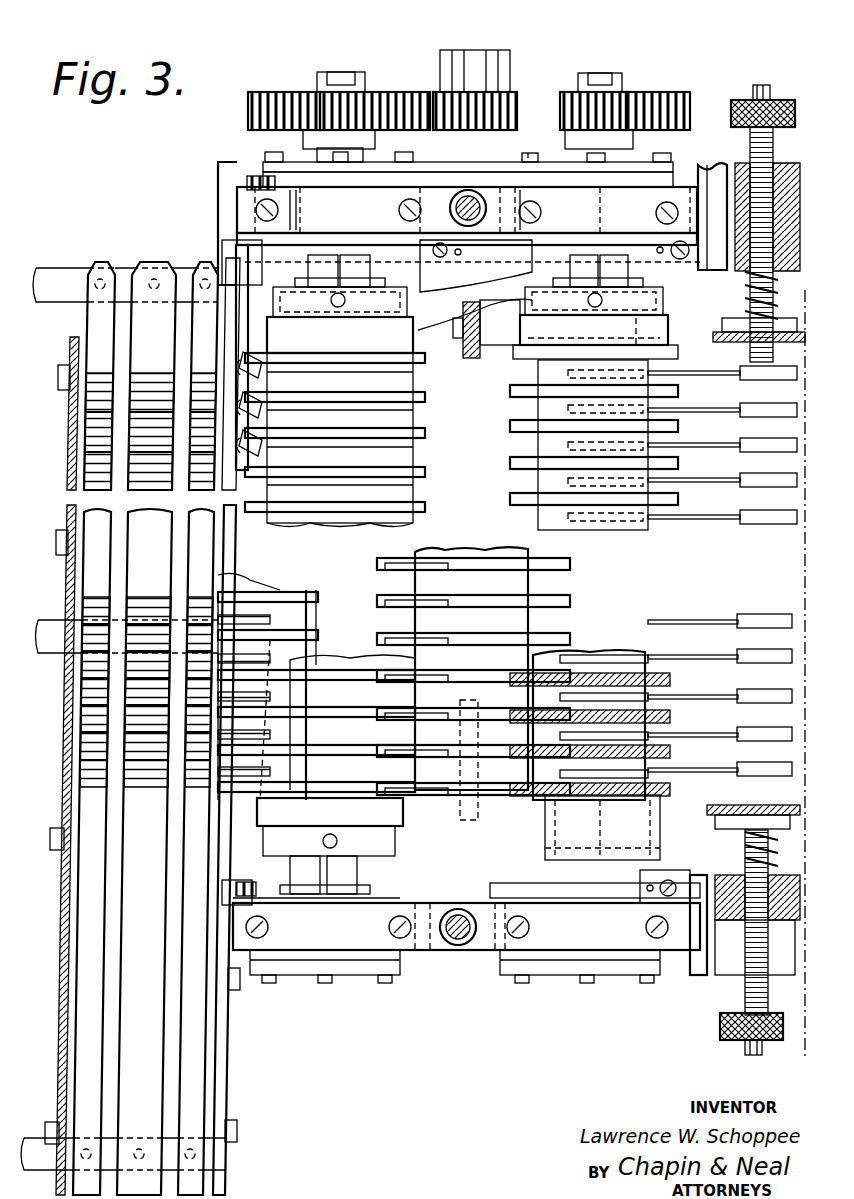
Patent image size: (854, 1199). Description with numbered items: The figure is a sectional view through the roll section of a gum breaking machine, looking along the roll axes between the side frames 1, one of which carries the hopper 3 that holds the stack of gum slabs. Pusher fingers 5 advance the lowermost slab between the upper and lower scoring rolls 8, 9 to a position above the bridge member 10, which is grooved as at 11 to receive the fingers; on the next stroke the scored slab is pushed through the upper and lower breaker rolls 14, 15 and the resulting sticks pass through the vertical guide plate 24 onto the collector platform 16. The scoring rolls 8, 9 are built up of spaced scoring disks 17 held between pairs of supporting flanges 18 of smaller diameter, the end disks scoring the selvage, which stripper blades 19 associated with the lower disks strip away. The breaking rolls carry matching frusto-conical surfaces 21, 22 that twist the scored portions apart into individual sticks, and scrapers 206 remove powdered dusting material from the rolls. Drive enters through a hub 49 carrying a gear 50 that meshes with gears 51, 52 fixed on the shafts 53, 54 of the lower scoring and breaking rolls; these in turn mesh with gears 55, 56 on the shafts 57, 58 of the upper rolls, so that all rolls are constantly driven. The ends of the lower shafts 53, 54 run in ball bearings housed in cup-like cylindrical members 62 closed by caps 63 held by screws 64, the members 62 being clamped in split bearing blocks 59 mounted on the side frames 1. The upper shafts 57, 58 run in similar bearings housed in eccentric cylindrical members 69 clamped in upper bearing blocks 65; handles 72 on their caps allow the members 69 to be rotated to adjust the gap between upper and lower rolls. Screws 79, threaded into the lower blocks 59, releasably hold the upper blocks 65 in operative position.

The side frame 1 is at (712, 186).
The hopper 3 is at (788, 170).
The pusher fingers 5 is at (728, 480).
The upper scoring roll 8 is at (510, 398).
The lower scoring roll 9 is at (607, 650).
The bridge member 10 is at (466, 352).
The grooves 11 is at (512, 660).
The upper breaker roll 14 is at (426, 420).
The lower breaker roll 15 is at (345, 662).
The collector platform 16 is at (100, 615).
The scoring disks 17 is at (682, 374).
The supporting flanges 18 is at (542, 472).
The stripper blades 19 is at (667, 328).
The frusto-conical surfaces of upper breaking roll 21 is at (346, 395).
The frusto-conical surfaces of lower breaking roll 22 is at (368, 760).
The vertical guide plate 24 is at (236, 340).
The scrapers 206 is at (243, 470).
The hub 49 is at (508, 78).
The gear 50 is at (517, 95).
The gear 51 is at (568, 104).
The gear 52 is at (362, 122).
The shaft 53 is at (578, 155).
The shaft 54 is at (368, 160).
The gear 55 is at (580, 150).
The gear 56 is at (284, 108).
The shaft 57 is at (608, 158).
The shaft 58 is at (320, 154).
The split bearing block 59 is at (632, 904).
The cylindrical member 62 is at (318, 960).
The cap 63 is at (294, 976).
The screws 64 is at (334, 983).
The upper bearing block 65 is at (602, 188).
The cylindrical member 69 is at (262, 182).
The handle 72 is at (342, 168).
The screws 79 is at (488, 212).